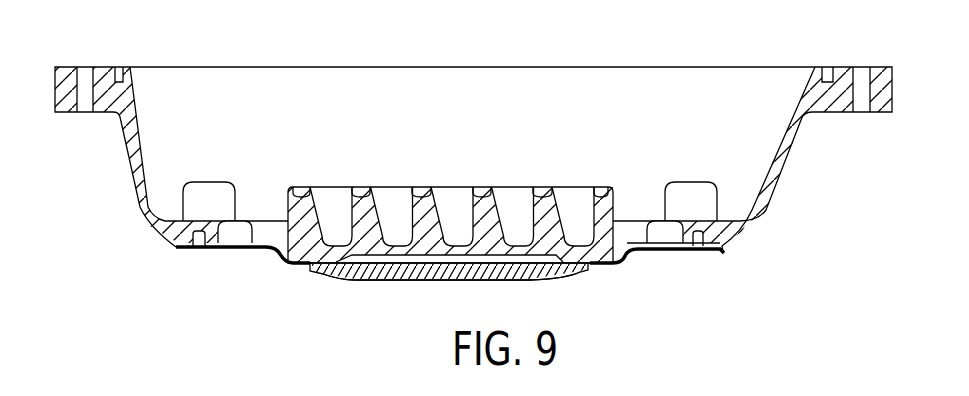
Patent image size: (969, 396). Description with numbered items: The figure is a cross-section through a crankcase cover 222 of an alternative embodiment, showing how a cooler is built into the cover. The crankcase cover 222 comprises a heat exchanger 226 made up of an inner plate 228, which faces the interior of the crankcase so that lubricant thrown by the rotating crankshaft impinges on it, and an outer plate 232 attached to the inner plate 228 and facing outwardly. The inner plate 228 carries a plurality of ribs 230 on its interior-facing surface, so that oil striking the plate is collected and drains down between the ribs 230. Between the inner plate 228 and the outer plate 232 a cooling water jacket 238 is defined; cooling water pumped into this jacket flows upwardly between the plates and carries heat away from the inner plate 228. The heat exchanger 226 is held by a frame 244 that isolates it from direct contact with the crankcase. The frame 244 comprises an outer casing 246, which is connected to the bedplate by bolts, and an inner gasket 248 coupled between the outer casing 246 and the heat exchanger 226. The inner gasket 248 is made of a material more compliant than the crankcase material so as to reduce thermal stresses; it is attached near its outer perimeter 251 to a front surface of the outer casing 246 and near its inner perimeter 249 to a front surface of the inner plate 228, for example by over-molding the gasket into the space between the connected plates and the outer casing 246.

The crankcase cover 222 is at (730, 33).
The heat exchanger 226 is at (459, 316).
The inner plate 228 is at (580, 243).
The ribs 230 is at (450, 184).
The outer plate 232 is at (540, 273).
The cooling water jacket 238 is at (451, 268).
The frame 244 is at (728, 260).
The outer casing 246 is at (133, 157).
The inner gasket 248 is at (243, 250).
The inner perimeter 249 is at (607, 269).
The outer perimeter 251 is at (186, 253).